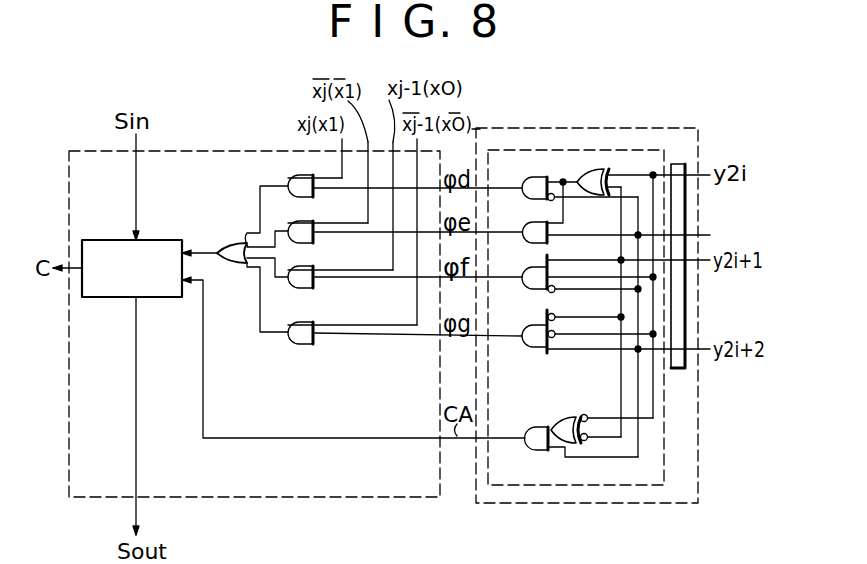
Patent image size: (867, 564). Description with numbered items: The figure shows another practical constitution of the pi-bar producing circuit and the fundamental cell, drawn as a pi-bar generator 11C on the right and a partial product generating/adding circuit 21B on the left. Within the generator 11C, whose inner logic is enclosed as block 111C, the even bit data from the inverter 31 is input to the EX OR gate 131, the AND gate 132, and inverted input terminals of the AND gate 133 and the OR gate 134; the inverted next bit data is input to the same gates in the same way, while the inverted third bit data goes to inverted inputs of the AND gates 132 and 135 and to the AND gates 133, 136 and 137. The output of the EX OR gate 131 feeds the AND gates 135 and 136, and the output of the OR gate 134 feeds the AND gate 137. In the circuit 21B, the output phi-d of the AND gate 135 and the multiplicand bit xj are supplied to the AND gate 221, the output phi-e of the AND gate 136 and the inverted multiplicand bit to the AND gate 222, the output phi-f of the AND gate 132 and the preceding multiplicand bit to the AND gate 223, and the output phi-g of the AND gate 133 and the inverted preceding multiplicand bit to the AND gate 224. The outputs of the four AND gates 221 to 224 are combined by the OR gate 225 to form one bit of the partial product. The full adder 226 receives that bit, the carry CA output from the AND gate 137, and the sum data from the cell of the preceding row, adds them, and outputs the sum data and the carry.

The partial product generating/adding circuit 21B is at (192, 151).
The full adder 226 is at (165, 240).
The OR gate 225 is at (240, 266).
The AND gate 221 is at (296, 165).
The AND gate 222 is at (296, 221).
The AND gate 223 is at (296, 266).
The AND gate 224 is at (296, 322).
The pi-bar generator 11C is at (513, 127).
The logic circuit 111C is at (568, 148).
The AND gate 135 is at (540, 165).
The AND gate 136 is at (530, 212).
The EX OR gate 131 is at (598, 160).
The AND gate 132 is at (530, 259).
The AND gate 133 is at (530, 317).
The AND gate 137 is at (530, 427).
The OR gate 134 is at (567, 417).
The inverter 31 is at (676, 164).